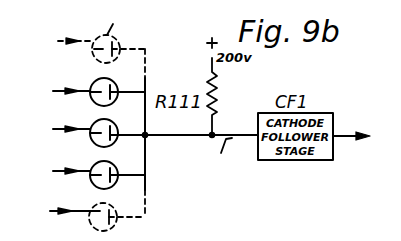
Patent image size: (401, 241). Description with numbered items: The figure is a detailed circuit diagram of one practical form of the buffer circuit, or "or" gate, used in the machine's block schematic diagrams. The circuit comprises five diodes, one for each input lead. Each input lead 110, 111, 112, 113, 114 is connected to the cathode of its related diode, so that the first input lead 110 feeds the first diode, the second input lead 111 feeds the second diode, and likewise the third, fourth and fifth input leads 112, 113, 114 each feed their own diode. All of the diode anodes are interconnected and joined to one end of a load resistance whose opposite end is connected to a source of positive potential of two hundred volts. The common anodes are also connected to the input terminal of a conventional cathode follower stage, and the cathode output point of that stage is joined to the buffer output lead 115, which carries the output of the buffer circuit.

The input lead 110 is at (53, 91).
The input lead 111 is at (53, 129).
The input lead 112 is at (53, 171).
The input lead 113 is at (58, 41).
The input lead 114 is at (81, 210).
The buffer output lead 115 is at (343, 134).